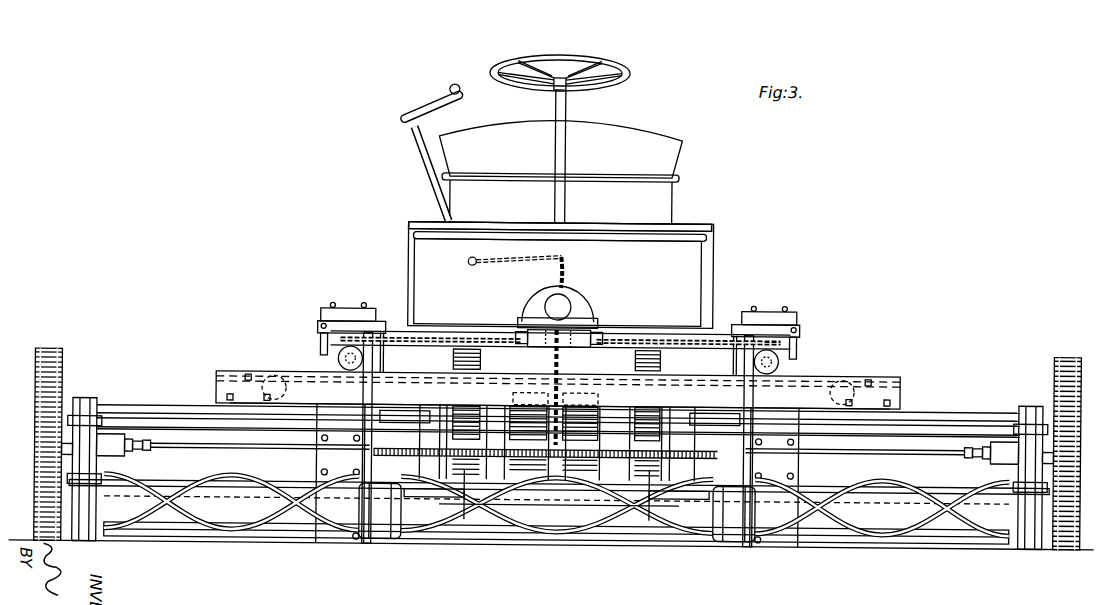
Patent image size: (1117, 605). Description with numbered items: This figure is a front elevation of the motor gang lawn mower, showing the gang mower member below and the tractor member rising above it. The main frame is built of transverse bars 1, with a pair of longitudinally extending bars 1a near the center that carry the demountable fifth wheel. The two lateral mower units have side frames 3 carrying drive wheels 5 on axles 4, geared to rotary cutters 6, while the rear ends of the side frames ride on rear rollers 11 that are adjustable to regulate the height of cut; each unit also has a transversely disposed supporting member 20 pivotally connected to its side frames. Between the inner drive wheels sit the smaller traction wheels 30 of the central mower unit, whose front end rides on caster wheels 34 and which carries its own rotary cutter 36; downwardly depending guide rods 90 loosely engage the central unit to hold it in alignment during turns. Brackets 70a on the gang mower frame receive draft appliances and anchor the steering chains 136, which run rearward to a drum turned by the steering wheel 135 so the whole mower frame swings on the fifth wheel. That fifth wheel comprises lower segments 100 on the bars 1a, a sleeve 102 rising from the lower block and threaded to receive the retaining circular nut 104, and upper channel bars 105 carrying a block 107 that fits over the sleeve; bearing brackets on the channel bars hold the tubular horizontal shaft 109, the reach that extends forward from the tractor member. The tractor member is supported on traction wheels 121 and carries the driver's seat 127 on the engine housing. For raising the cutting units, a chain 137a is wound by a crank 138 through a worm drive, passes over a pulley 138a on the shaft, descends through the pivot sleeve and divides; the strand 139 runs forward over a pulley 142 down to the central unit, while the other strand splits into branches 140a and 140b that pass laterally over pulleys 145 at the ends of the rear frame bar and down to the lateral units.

The transverse bar 1 is at (882, 385).
The longitudinally extending bar 1a is at (518, 363).
The side frame 3 is at (87, 404).
The axle 4 is at (68, 444).
The drive wheel 5 is at (40, 468).
The rotary cutter 6 is at (245, 528).
The rear roller 11 is at (183, 540).
The transversely disposed supporting member 20 is at (158, 413).
The traction wheel 30 is at (528, 544).
The caster wheel 34 is at (378, 542).
The rotary cutter 36 is at (598, 533).
The bracket 70a is at (775, 353).
The guide rod 90 is at (367, 390).
The lower segment 100 is at (428, 359).
The sleeve 102 is at (600, 314).
The retaining circular nut 104 is at (523, 318).
The channel bar 105 is at (519, 331).
The block 107 is at (628, 328).
The shaft 109 is at (565, 303).
The traction wheel 121 is at (350, 310).
The driver's seat 127 is at (630, 134).
The steering wheel 135 is at (560, 58).
The chain 136 is at (395, 332).
The chain 137a is at (496, 265).
The crank 138 is at (434, 112).
The pulley 138a is at (564, 263).
The strand 139 is at (575, 420).
The branch 140a is at (398, 380).
The branch 140b is at (724, 378).
The pulley 142 is at (540, 373).
The pulley 145 is at (273, 384).